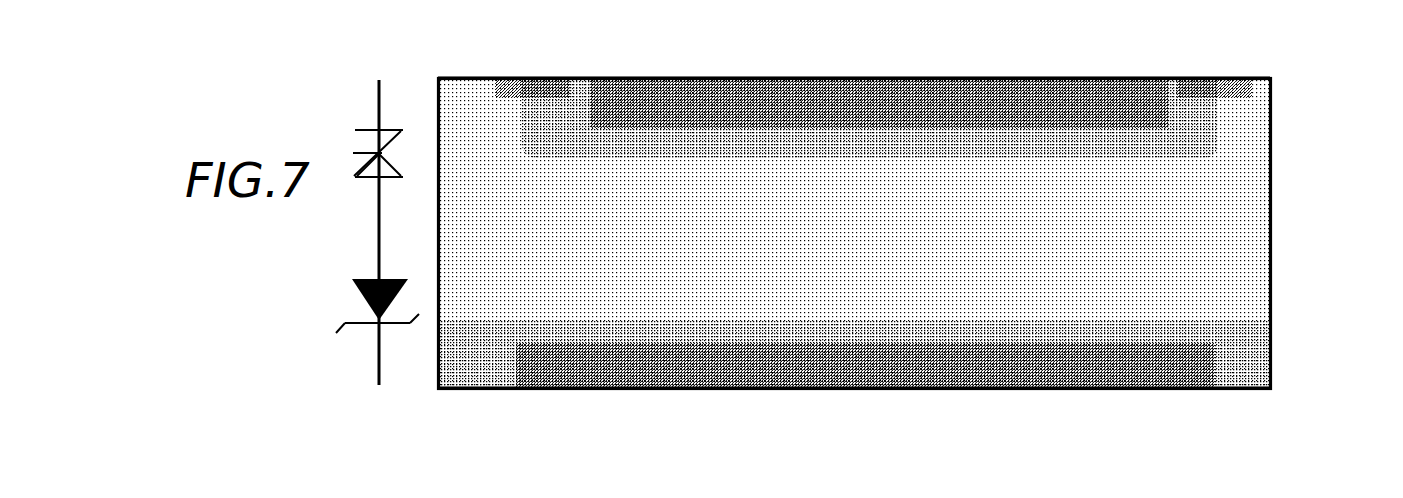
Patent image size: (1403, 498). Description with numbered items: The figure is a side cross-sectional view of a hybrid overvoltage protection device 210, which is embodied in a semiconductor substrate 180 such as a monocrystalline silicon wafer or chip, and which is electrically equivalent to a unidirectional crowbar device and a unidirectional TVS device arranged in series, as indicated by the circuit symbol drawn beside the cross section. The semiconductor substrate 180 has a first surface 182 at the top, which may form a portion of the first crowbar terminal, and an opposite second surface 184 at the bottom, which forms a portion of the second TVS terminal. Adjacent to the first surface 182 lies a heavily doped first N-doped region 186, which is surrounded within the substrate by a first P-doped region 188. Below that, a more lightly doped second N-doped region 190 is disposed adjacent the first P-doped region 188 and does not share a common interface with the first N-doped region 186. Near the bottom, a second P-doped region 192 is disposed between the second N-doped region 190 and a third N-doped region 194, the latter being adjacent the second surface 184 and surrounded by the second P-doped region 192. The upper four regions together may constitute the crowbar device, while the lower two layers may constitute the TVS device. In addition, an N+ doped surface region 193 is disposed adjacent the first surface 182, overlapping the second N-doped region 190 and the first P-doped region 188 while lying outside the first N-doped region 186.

The semiconductor substrate 180 is at (1273, 190).
The first surface 182 is at (470, 70).
The second surface 184 is at (492, 400).
The first N-doped region 186 is at (797, 77).
The first P-doped region 188 is at (1216, 128).
The second N-doped region 190 is at (1273, 252).
The second P-doped region 192 is at (1273, 336).
The N+ doped surface region 193 is at (540, 77).
The third N-doped region 194 is at (1210, 373).
The hybrid overvoltage protection device 210 is at (338, 74).